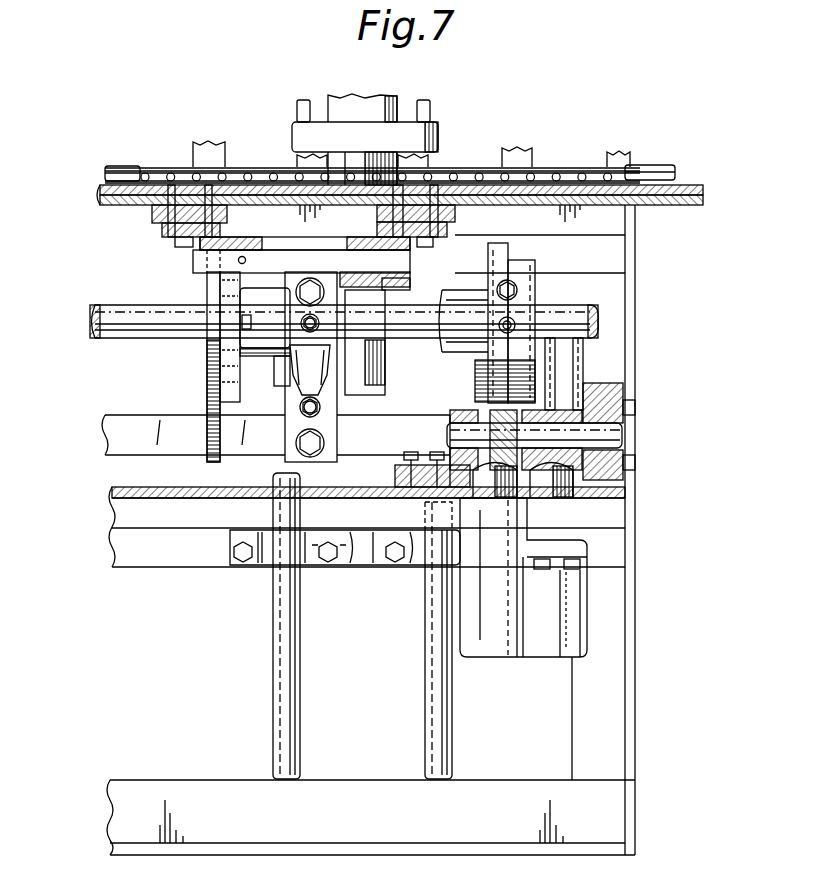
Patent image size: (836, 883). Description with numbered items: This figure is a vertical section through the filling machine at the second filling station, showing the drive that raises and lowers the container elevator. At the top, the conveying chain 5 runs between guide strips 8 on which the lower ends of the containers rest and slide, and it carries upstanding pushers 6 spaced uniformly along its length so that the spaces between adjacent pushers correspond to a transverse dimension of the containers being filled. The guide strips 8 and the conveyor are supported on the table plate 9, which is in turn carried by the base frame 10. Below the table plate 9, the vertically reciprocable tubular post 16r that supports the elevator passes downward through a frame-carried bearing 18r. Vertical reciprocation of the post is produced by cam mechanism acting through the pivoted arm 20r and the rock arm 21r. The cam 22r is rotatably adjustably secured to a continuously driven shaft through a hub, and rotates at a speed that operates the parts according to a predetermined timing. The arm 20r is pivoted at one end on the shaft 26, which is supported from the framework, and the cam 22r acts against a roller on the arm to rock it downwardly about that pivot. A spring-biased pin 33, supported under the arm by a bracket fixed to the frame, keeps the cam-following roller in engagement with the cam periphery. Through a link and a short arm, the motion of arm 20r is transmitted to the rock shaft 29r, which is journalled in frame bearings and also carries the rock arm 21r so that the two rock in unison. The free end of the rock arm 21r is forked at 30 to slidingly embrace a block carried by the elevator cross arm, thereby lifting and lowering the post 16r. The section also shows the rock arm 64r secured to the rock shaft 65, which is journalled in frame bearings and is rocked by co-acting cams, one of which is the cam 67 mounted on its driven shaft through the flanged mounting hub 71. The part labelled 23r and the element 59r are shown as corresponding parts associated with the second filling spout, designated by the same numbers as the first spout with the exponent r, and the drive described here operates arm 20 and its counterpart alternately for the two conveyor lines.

The conveying chain 5 is at (565, 178).
The upstanding pusher 6 is at (193, 152).
The guide strip 8 is at (118, 175).
The table plate 9 is at (682, 188).
The base frame 10 is at (631, 705).
The tubular post 16r is at (272, 690).
The bearing 18r is at (290, 558).
The arm 20 is at (488, 470).
The arm 20r is at (128, 323).
The rock arm 21r is at (375, 392).
The cam 22r is at (520, 268).
The plate 23r is at (503, 250).
The shaft 26 is at (446, 435).
The rock shaft 29r is at (412, 372).
The fork 30 is at (517, 637).
The spring-biased pin 33 is at (550, 470).
The collar 59r is at (386, 297).
The rock arm 64r is at (360, 232).
The rock shaft 65 is at (192, 259).
The cam 67 is at (206, 398).
The flanged mounting hub 71 is at (266, 352).